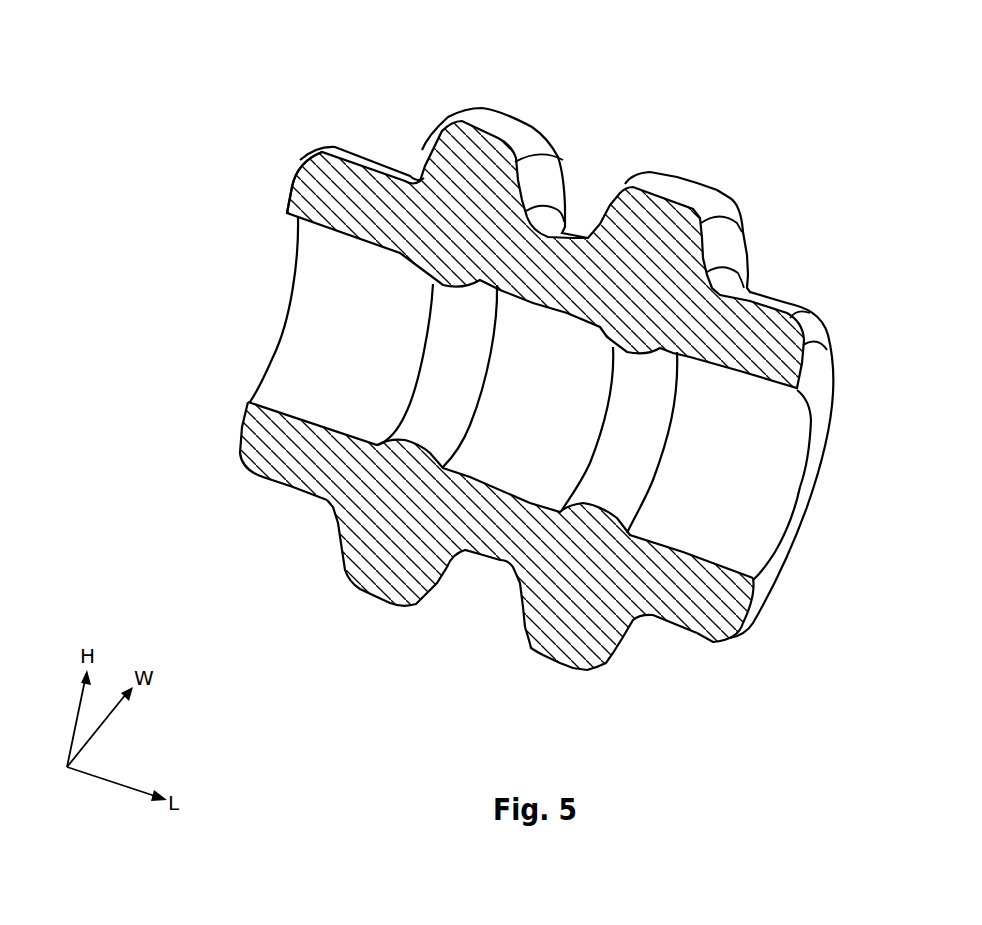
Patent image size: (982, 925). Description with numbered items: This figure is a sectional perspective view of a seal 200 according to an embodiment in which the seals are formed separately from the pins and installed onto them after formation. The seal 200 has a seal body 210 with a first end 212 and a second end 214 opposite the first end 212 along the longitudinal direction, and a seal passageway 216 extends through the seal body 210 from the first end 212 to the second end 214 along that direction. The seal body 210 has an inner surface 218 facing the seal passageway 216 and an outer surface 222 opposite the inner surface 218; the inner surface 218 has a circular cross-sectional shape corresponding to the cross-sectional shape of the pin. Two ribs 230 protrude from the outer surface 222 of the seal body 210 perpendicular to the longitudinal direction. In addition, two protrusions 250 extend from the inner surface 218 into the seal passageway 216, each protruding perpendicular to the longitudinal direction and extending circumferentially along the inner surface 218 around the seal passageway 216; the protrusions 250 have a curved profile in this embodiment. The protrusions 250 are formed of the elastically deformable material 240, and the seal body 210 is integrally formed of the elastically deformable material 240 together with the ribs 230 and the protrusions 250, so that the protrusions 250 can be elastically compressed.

The seal 200 is at (590, 392).
The seal body 210 is at (819, 312).
The first end 212 is at (287, 190).
The second end 214 is at (817, 373).
The seal passageway 216 is at (771, 438).
The inner surface 218 is at (750, 530).
The outer surface 222 is at (707, 638).
The ribs 230 is at (382, 599).
The elastically deformable material 240 is at (562, 665).
The protrusions 250 is at (418, 397).